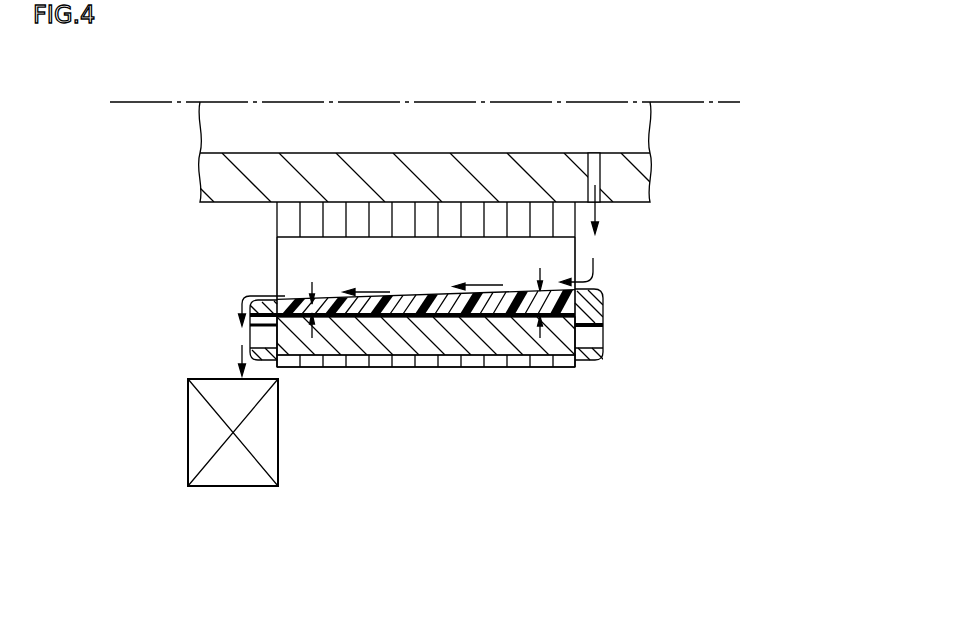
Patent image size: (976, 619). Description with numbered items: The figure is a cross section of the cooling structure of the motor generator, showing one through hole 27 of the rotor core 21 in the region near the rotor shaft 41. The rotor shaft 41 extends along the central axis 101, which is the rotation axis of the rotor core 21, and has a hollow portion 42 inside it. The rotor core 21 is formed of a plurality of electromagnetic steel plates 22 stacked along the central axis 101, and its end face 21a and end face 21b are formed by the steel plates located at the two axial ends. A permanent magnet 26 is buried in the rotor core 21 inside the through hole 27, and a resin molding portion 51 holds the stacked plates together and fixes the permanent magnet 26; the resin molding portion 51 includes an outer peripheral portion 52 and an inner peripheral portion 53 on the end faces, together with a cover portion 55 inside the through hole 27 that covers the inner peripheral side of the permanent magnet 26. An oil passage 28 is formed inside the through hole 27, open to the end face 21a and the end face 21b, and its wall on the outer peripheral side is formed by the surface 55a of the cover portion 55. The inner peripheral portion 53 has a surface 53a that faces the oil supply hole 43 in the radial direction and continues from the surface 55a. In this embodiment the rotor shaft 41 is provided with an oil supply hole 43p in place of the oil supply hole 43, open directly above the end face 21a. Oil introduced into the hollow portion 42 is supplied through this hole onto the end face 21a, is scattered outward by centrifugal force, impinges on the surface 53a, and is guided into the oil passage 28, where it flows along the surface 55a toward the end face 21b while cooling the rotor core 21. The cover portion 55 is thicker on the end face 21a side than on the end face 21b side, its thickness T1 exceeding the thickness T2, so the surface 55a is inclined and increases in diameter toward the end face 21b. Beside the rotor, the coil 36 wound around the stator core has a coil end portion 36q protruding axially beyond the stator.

The central axis 101 is at (148, 100).
The rotor shaft 41 is at (222, 178).
The hollow portion 42 is at (465, 124).
The oil supply hole 43 is at (597, 175).
The oil supply hole 43p is at (595, 209).
The through hole 27 is at (336, 238).
The rotor core 21 is at (304, 367).
The end face 21a is at (578, 247).
The end face 21b is at (277, 244).
The oil passage 28 is at (308, 265).
The inner peripheral portion 53 is at (595, 306).
The surface 53a is at (598, 286).
The outer peripheral portion 52 is at (595, 352).
The resin molding portion 51 is at (613, 374).
The cover portion 55 is at (448, 335).
The surface 55a is at (417, 304).
The permanent magnet 26 is at (468, 345).
The electromagnetic steel plate 22 is at (518, 362).
The thickness T1 is at (542, 303).
The thickness T2 is at (323, 310).
The coil 36 is at (177, 438).
The coil end portion 36q is at (233, 478).